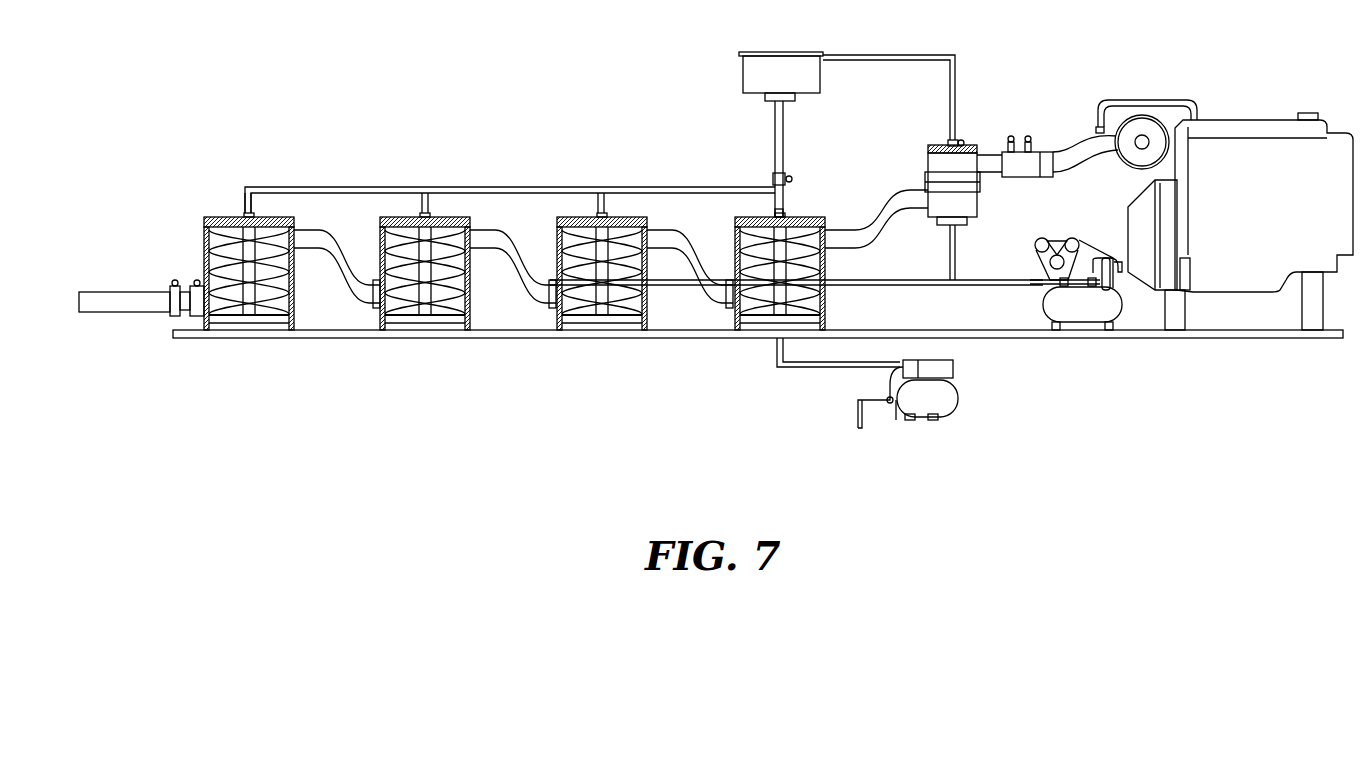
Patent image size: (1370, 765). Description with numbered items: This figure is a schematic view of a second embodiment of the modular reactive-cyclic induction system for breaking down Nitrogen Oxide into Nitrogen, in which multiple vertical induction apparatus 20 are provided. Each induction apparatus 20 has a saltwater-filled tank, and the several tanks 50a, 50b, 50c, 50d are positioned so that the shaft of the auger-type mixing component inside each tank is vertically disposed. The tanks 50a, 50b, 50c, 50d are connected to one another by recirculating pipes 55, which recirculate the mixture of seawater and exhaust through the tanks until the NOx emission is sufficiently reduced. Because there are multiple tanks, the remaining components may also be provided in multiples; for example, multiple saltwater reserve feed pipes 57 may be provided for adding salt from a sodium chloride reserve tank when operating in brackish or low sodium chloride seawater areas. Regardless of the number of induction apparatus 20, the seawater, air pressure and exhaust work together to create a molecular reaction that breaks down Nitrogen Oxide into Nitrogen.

The induction apparatus 20 is at (178, 353).
The tank 50a is at (800, 225).
The tank 50b is at (612, 224).
The tank 50c is at (428, 222).
The tank 50d is at (235, 222).
The recirculating pipe 55 is at (337, 297).
The saltwater reserve feed pipe 57 is at (600, 213).